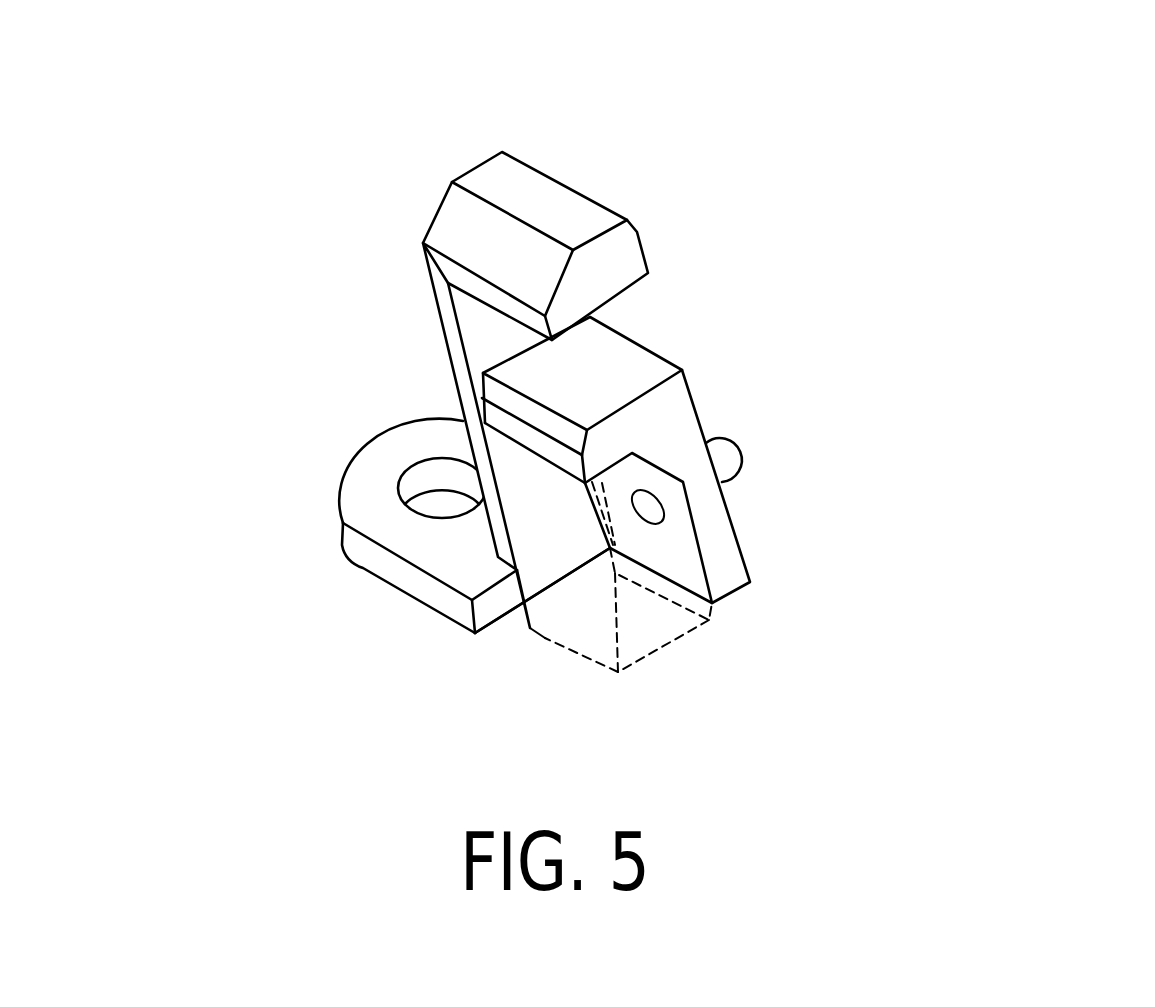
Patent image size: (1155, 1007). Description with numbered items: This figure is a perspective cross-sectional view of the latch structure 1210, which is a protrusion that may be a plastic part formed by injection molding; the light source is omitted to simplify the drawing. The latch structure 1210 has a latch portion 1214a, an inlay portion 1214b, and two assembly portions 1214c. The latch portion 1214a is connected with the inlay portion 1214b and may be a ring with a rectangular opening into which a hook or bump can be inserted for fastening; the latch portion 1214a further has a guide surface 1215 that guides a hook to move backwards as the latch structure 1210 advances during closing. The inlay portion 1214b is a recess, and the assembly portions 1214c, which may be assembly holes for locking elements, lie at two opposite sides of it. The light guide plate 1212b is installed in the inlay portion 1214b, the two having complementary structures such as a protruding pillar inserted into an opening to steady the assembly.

The latch structure 1210 is at (1060, 660).
The light guide plate 1212b is at (672, 648).
The latch portion 1214a is at (428, 230).
The inlay portion 1214b is at (512, 462).
The assembly portion 1214c is at (405, 455).
The guide surface 1215 is at (453, 222).